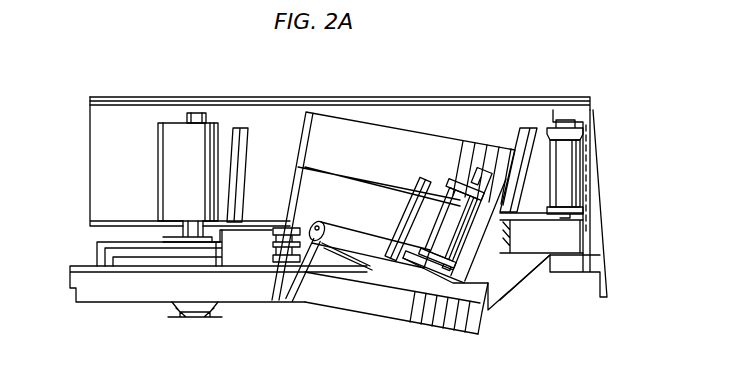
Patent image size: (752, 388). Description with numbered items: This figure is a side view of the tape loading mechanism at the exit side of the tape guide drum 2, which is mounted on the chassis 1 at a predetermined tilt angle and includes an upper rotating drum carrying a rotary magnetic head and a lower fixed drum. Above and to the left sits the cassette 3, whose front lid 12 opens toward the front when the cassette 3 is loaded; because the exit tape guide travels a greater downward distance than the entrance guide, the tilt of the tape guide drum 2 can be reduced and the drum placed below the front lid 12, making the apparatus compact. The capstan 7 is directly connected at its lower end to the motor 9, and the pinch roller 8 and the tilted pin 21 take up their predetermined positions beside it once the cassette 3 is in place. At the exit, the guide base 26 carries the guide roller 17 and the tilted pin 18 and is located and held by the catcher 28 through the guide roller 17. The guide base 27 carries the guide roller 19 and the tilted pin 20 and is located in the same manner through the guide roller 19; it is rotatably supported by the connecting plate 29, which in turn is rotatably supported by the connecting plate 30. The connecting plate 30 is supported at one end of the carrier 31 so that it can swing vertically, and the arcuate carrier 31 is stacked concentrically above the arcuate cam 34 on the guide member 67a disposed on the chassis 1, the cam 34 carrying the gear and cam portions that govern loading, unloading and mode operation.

The chassis 1 is at (606, 291).
The tape guide drum 2 is at (330, 157).
The cassette 3 is at (100, 167).
The capstan 7 is at (200, 113).
The pinch roller 8 is at (168, 167).
The motor 9 is at (118, 294).
The front lid 12 is at (468, 100).
The guide roller 17 is at (568, 165).
The tilted pin 18 is at (523, 144).
The guide roller 19 is at (430, 237).
The tilted pin 20 is at (406, 217).
The tilted pin 21 is at (249, 138).
The guide base 26 is at (533, 227).
The guide base 27 is at (430, 274).
The catcher 28 is at (512, 283).
The connecting plate 29 is at (354, 285).
The connecting plate 30 is at (337, 229).
The carrier 31 is at (271, 237).
The cam 34 is at (267, 270).
The guide member 67a is at (272, 270).